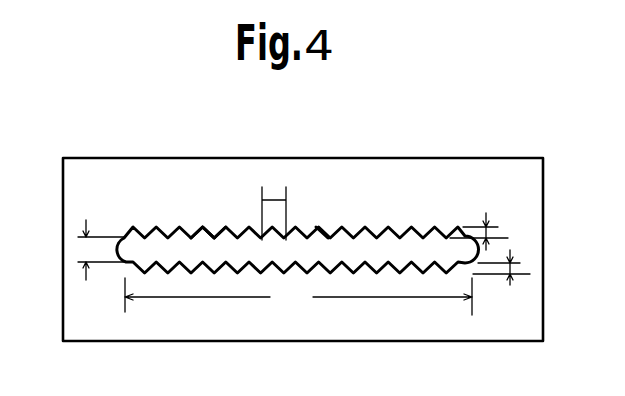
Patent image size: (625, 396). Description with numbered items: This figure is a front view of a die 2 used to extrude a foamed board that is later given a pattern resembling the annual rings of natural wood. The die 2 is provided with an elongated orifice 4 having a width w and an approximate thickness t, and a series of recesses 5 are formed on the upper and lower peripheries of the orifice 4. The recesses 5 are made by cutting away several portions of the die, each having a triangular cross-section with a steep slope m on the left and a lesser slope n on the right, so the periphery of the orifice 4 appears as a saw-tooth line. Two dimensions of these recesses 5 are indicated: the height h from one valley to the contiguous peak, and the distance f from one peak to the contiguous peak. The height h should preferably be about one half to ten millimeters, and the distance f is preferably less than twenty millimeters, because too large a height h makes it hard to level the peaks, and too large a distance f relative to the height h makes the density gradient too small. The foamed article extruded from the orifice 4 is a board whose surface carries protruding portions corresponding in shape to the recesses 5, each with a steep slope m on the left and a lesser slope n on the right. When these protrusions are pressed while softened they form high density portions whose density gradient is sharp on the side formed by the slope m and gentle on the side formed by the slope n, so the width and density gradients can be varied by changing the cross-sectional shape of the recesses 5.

The die 2 is at (460, 175).
The orifice 4 is at (237, 252).
The recesses 5 is at (328, 236).
The steep slope m is at (199, 232).
The lesser slope n is at (212, 232).
The thickness t is at (82, 250).
The distance f is at (274, 204).
The width w is at (298, 296).
The height h is at (490, 230).